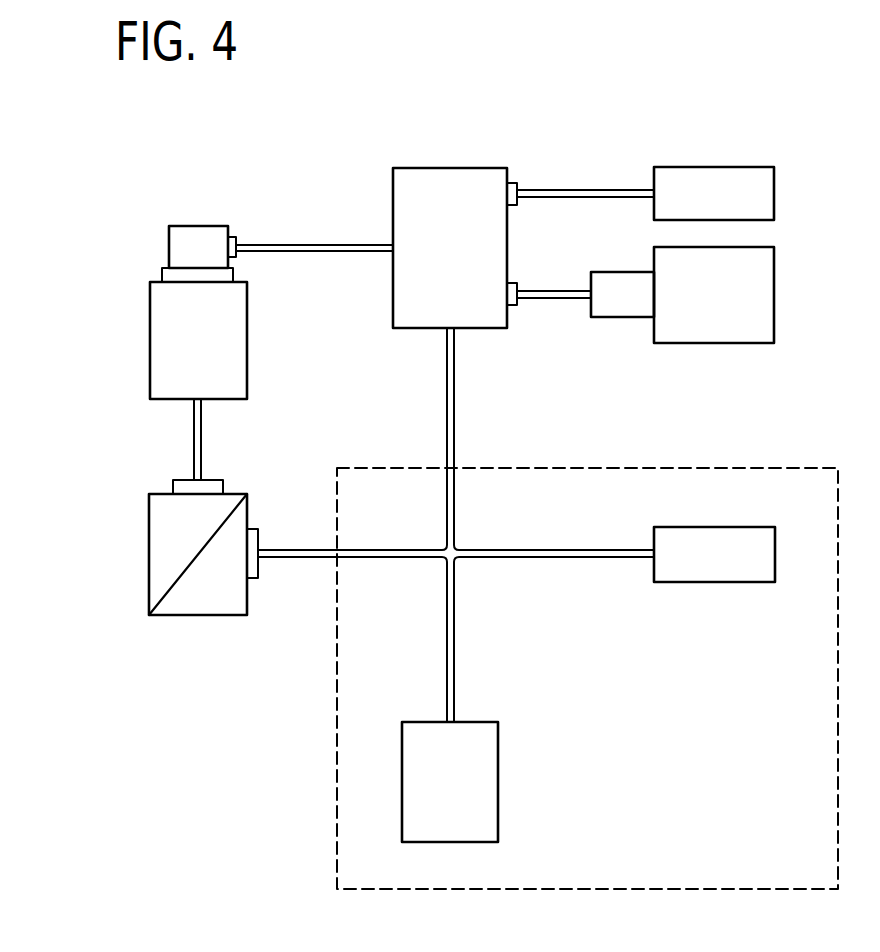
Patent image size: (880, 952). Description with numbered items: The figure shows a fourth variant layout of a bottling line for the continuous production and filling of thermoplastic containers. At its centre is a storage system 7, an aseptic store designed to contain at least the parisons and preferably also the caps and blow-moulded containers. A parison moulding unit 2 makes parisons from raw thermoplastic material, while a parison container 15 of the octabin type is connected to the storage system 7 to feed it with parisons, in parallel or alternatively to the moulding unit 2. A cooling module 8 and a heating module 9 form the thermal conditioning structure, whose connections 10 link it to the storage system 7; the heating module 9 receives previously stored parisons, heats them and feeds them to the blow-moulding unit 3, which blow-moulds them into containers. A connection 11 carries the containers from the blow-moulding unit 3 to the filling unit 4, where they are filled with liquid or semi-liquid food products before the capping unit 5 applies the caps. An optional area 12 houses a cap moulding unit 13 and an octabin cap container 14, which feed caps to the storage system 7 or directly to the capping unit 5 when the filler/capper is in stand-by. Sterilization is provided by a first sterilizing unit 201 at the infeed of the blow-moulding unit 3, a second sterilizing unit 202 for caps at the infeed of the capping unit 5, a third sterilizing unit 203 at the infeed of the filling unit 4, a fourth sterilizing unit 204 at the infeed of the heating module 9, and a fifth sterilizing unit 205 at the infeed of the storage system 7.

The moulding unit 2 is at (718, 306).
The blow-moulding unit 3 is at (205, 348).
The filling unit 4 is at (165, 527).
The capping unit 5 is at (188, 602).
The storage system 7 is at (455, 259).
The cooling module 8 is at (621, 305).
The heating module 9 is at (185, 248).
The connections 10 is at (312, 248).
The connection 11 is at (198, 443).
The area 12 is at (335, 745).
The cap moulding unit 13 is at (462, 798).
The cap container 14 is at (727, 547).
The parison container 15 is at (750, 193).
The first sterilizing unit 201 is at (170, 274).
The second sterilizing unit 202 is at (253, 580).
The third sterilizing unit 203 is at (187, 485).
The fourth sterilizing unit 204 is at (230, 230).
The fifth sterilizing unit 205 is at (510, 180).